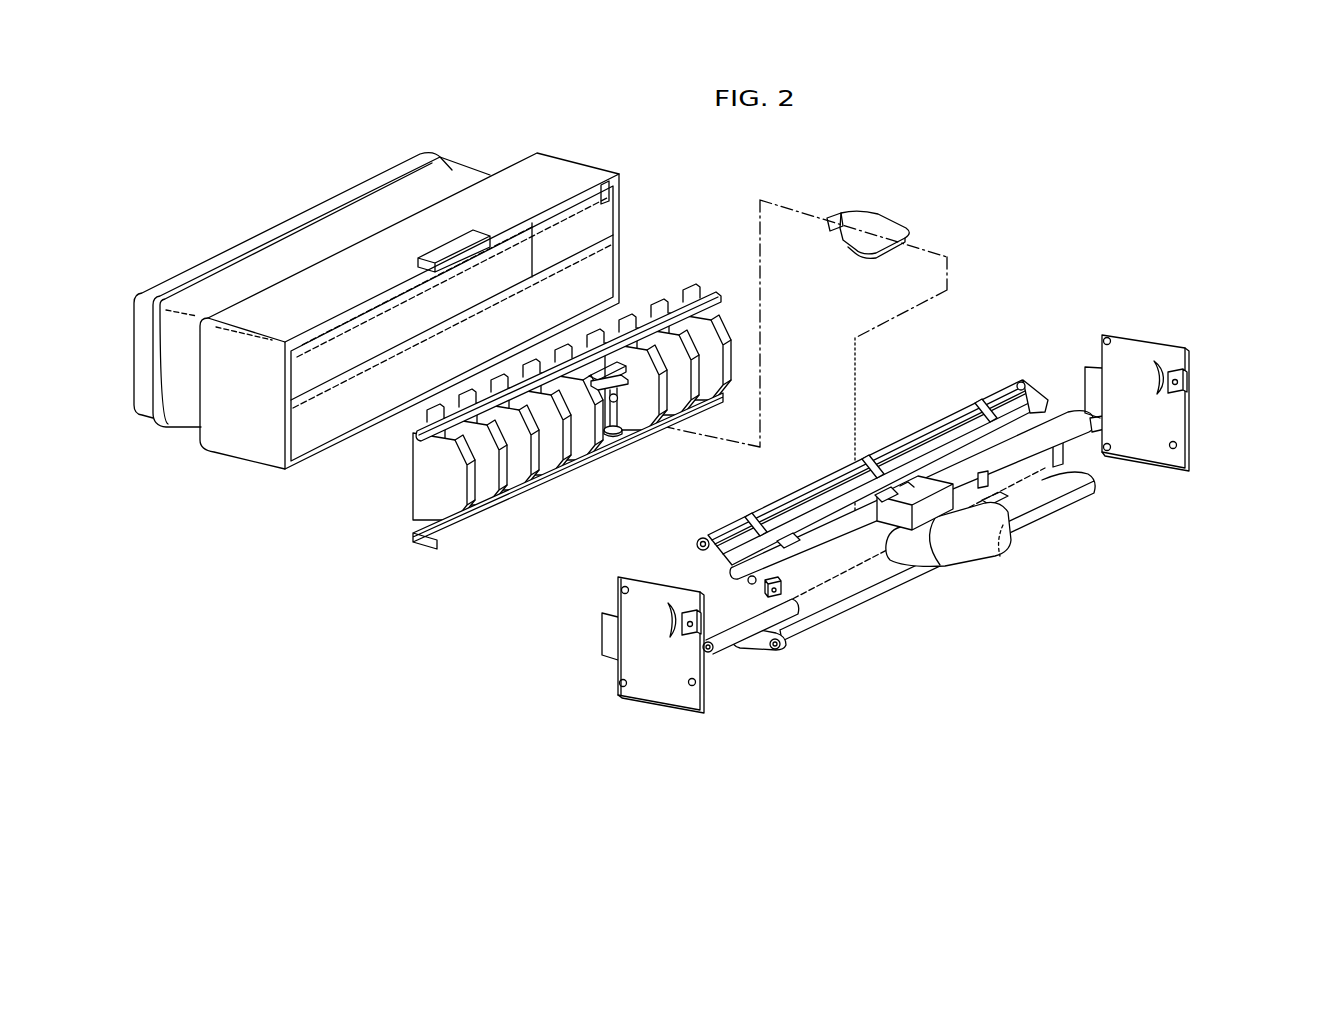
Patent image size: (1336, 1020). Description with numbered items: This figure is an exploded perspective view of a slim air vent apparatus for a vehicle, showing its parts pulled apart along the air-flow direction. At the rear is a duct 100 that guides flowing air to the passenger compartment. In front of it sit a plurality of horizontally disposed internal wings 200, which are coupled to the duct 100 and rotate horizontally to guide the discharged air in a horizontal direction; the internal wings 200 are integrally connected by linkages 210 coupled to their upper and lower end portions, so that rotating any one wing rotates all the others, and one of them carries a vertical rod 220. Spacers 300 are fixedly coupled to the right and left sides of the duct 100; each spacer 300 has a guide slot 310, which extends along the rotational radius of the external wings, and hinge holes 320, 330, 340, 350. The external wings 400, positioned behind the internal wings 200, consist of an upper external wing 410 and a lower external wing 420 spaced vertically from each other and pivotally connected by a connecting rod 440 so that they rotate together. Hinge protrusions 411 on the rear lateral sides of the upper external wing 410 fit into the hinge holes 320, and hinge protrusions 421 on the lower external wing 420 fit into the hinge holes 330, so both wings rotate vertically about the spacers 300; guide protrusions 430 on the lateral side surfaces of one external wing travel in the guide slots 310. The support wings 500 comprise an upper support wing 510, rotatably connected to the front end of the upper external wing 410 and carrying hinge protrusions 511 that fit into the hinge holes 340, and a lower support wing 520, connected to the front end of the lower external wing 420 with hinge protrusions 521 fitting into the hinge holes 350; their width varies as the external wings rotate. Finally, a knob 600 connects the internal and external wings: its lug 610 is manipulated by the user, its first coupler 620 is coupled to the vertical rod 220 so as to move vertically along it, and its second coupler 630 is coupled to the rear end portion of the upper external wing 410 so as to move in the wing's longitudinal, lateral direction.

The duct 100 is at (282, 303).
The internal wings 200 is at (488, 495).
The linkages 210 is at (692, 293).
The vertical rod 220 is at (618, 420).
The spacers 300 is at (891, 524).
The guide slots 310 is at (1151, 372).
The hinge hole 320 is at (1188, 380).
The hinge hole 330 is at (1173, 450).
The hinge holes 340 is at (1107, 337).
The hinge holes 350 is at (1107, 452).
The external wings 400 is at (925, 525).
The upper external wing 410 is at (917, 508).
The hinge protrusions 411 is at (787, 634).
The lower external wing 420 is at (913, 605).
The hinge protrusions 421 is at (772, 598).
The guide protrusions 430 is at (777, 648).
The connecting rod 440 is at (1090, 424).
The support wings 500 is at (865, 452).
The upper support wing 510 is at (968, 408).
The hinge protrusions 511 is at (699, 542).
The lower support wing 520 is at (736, 650).
The hinge protrusions 521 is at (711, 653).
The knob 600 is at (982, 573).
The lug 610 is at (1000, 548).
The first coupler 620 is at (877, 225).
The second coupler 630 is at (910, 487).